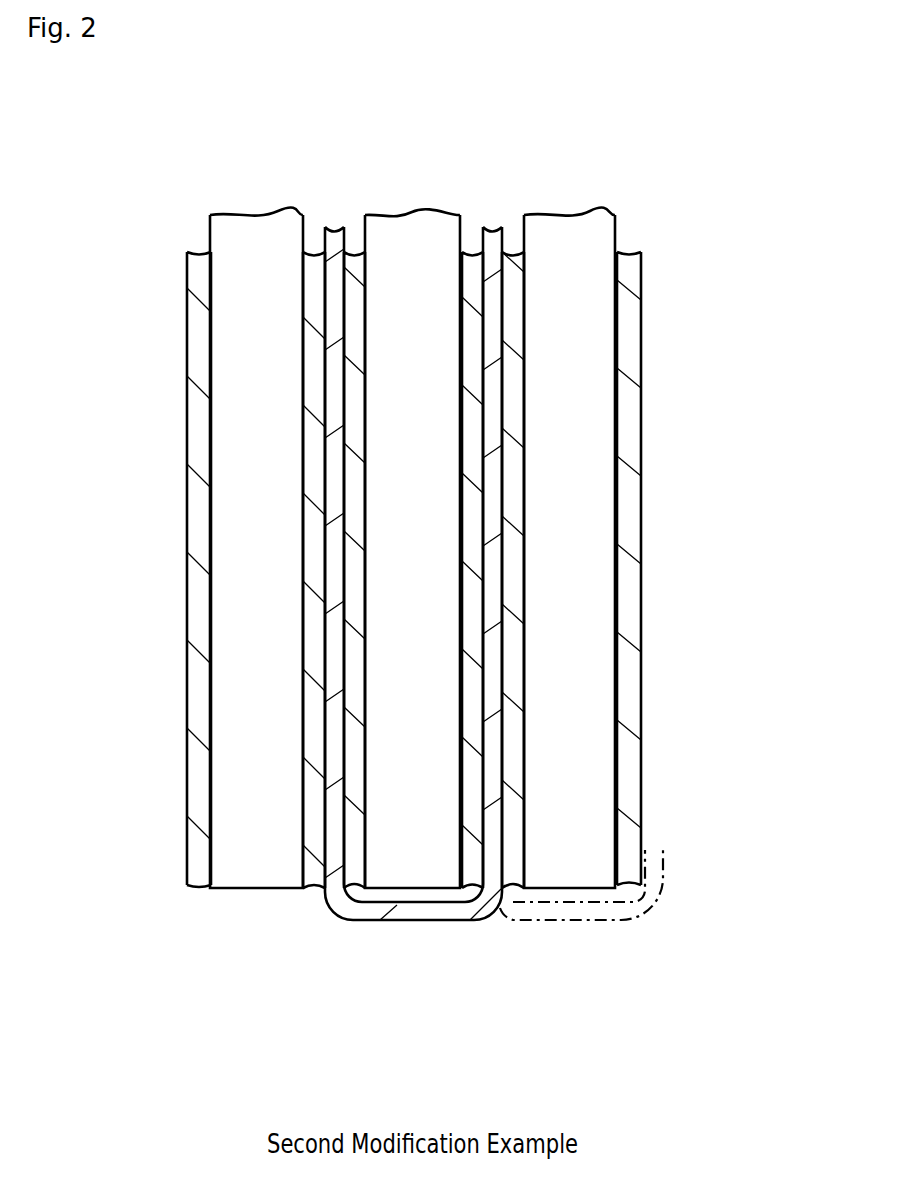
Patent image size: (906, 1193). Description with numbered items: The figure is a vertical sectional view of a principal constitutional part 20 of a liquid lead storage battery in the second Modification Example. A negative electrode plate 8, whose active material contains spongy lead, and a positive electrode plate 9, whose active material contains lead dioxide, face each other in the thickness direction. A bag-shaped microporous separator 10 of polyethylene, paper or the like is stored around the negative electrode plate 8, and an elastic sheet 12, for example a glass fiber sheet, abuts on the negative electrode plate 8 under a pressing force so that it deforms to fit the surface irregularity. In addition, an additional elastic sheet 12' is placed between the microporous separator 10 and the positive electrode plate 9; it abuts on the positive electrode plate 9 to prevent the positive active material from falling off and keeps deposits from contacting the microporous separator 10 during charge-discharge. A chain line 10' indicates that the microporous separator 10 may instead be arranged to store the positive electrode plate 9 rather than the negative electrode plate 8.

The negative electrode plate 8 is at (400, 233).
The positive electrode plate 9 is at (257, 245).
The elastic sheet 12 is at (415, 502).
The additional elastic sheet 12' is at (419, 500).
The microporous separator 10 is at (415, 955).
The chain line 10' is at (581, 938).
The principal constitutional part 20 is at (407, 1109).